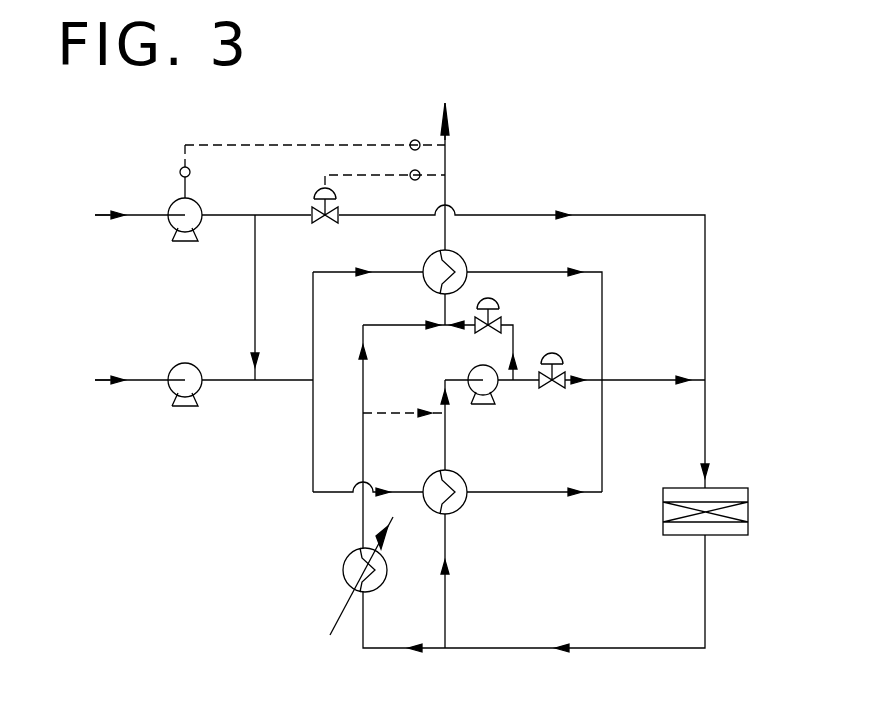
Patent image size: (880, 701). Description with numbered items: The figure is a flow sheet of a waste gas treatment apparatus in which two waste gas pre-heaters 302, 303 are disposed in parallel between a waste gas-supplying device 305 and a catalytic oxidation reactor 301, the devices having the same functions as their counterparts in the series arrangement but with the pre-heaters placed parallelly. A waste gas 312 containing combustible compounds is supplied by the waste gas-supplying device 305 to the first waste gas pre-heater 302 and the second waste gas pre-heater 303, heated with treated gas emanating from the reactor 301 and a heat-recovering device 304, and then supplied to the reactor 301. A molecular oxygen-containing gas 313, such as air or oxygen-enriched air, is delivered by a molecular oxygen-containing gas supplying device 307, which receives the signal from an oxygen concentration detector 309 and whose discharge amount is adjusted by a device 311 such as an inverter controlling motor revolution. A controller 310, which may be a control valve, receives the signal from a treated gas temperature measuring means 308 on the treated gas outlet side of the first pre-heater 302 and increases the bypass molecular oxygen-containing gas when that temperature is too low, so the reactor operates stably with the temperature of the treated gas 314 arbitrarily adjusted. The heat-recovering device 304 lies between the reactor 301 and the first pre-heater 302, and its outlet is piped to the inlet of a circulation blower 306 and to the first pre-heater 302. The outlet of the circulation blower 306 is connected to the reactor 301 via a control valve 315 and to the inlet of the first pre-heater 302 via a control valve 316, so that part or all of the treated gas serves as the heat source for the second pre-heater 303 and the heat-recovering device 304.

The catalytic oxidation reactor 301 is at (720, 487).
The first waste gas pre-heater 302 is at (462, 256).
The second waste gas pre-heater 303 is at (465, 484).
The heat-recovering device 304 is at (345, 566).
The waste gas-supplying device 305 is at (185, 363).
The circulation blower 306 is at (470, 370).
The molecular oxygen-containing gas supplying device 307 is at (185, 245).
The treated gas temperature measuring means 308 is at (411, 171).
The oxygen concentration detector 309 is at (418, 140).
The controller to adjust the amount of the bypass molecular oxygen-containing gas 310 is at (317, 190).
The device to adjust the amount of the discharged molecular oxygen-containing gas 311 is at (180, 172).
The waste gas 312 is at (76, 383).
The molecular oxygen-containing gas 313 is at (76, 217).
The treated gas 314 is at (449, 108).
The control valve 315 is at (552, 352).
The control valve 316 is at (500, 301).